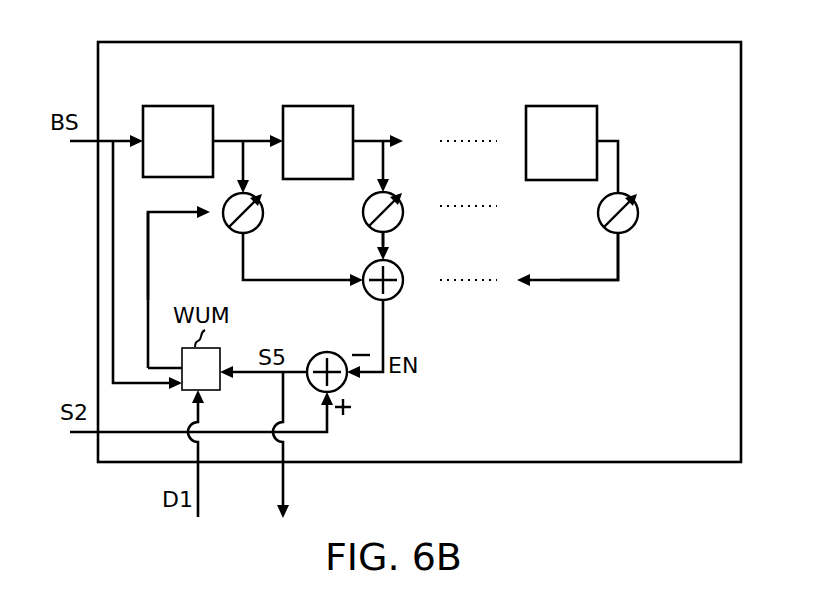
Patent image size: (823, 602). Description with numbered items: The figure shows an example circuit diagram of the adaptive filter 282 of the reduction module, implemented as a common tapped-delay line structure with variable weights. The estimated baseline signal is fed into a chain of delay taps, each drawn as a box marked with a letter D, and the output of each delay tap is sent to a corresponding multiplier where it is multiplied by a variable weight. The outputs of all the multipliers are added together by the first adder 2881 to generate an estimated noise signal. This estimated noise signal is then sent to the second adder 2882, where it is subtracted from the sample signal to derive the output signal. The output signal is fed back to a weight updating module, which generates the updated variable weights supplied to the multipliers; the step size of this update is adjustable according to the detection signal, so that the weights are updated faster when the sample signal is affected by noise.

The adaptive filter 282 is at (742, 312).
The first adder 2881 is at (404, 285).
The second adder 2882 is at (331, 337).